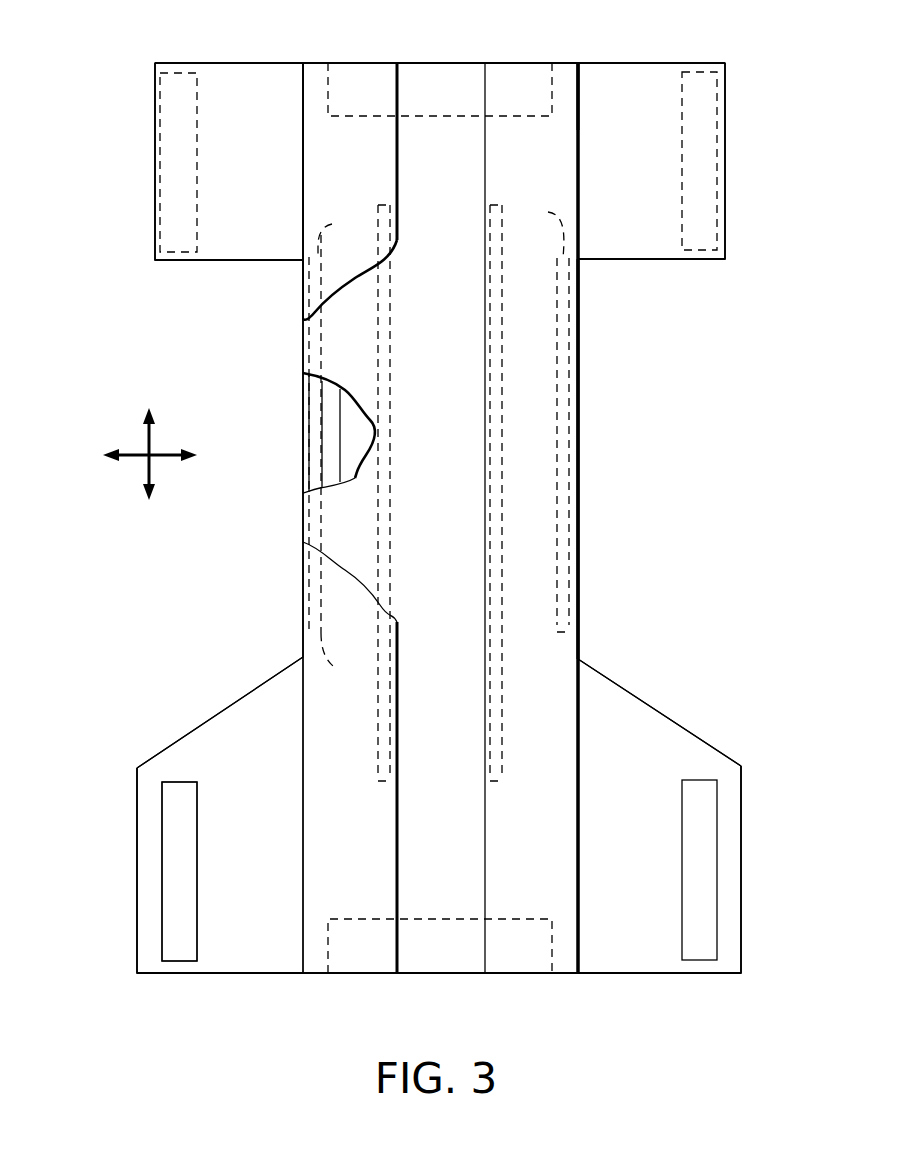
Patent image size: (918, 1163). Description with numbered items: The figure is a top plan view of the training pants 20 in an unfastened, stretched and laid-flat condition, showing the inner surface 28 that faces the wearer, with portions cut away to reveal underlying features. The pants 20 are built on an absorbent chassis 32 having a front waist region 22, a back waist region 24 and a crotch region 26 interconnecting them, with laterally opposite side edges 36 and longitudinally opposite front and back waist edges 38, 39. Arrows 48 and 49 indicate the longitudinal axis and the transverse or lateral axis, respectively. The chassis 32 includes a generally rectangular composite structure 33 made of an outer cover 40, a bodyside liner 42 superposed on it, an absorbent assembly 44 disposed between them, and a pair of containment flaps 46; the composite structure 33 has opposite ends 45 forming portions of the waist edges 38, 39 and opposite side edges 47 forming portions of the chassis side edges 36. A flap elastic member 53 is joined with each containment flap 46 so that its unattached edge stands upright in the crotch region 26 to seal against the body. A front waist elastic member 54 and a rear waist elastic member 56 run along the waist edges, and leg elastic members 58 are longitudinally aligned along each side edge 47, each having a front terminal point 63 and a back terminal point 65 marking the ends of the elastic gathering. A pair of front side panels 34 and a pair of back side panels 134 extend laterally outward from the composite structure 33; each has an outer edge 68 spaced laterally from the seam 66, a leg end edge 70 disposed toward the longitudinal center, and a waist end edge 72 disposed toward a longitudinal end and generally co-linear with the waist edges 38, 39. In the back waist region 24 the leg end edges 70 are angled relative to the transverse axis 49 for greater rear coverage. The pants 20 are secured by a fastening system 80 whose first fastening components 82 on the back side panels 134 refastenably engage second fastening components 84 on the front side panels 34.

The pants 20 is at (205, 56).
The front waist region 22 is at (146, 96).
The back waist region 24 is at (704, 697).
The crotch region 26 is at (624, 581).
The inner surface 28 is at (612, 975).
The absorbent chassis 32 is at (589, 540).
The composite structure 33 is at (578, 105).
The front side panels 34 is at (660, 72).
The side edges 36 is at (580, 488).
The front waist edge 38 is at (318, 62).
The back waist edge 39 is at (268, 975).
The outer cover 40 is at (337, 383).
The bodyside liner 42 is at (419, 293).
The absorbent assembly 44 is at (357, 445).
The opposite ends 45 is at (565, 62).
The containment flaps 46 is at (378, 147).
The side edges of composite structure 47 is at (303, 130).
The arrow depicting longitudinal axis 48 is at (147, 436).
The arrow depicting transverse axis 49 is at (152, 457).
The flap elastic member 53 is at (372, 205).
The front waist elastic member 54 is at (425, 80).
The rear waist elastic member 56 is at (517, 960).
The leg elastic members 58 is at (313, 398).
The front terminal point 63 is at (441, 228).
The back terminal point 65 is at (339, 659).
The seam 66 is at (303, 195).
The outer edge 68 is at (155, 220).
The leg end edge 70 is at (240, 262).
The waist end edge 72 is at (283, 62).
The fastening system 80 is at (178, 770).
The first fastening components 82 is at (175, 828).
The second fastening components 84 is at (160, 156).
The back side panels 134 is at (224, 823).